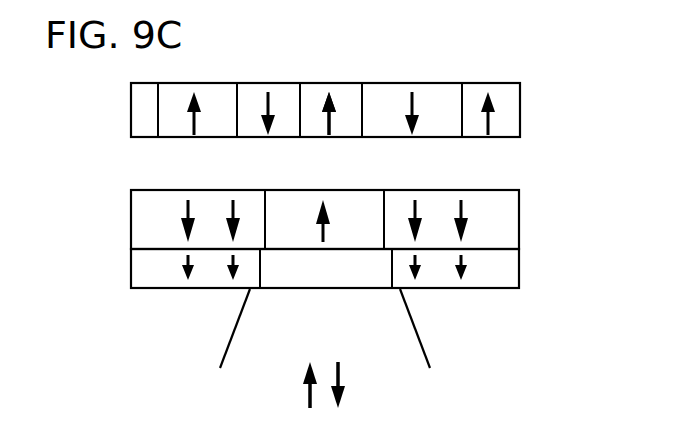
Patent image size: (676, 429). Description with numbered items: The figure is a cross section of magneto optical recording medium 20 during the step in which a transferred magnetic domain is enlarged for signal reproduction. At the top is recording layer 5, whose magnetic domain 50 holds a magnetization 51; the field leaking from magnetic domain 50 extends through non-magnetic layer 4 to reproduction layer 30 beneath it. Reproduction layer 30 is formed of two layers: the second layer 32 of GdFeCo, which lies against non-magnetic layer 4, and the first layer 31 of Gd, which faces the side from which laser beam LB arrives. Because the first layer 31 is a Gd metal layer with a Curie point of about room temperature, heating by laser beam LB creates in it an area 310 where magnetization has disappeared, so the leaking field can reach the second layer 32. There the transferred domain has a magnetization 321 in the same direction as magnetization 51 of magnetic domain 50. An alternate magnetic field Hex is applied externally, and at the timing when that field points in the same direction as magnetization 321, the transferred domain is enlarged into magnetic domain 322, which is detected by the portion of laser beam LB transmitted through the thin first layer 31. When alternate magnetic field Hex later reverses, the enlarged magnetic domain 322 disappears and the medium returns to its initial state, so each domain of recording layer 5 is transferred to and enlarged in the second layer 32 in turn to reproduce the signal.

The magneto optical recording medium 20 is at (387, 191).
The recording layer 5 is at (513, 109).
The non-magnetic layer 4 is at (513, 159).
The magnetic domain 50 is at (347, 93).
The magnetization 51 is at (323, 108).
The reproduction layer 30 is at (387, 254).
The second layer 32 is at (512, 224).
The first layer 31 is at (512, 271).
The magnetization 321 is at (317, 212).
The magnetic domain 322 is at (343, 242).
The area 310 is at (293, 289).
The laser beam LB is at (412, 330).
The alternate magnetic field Hex is at (347, 385).